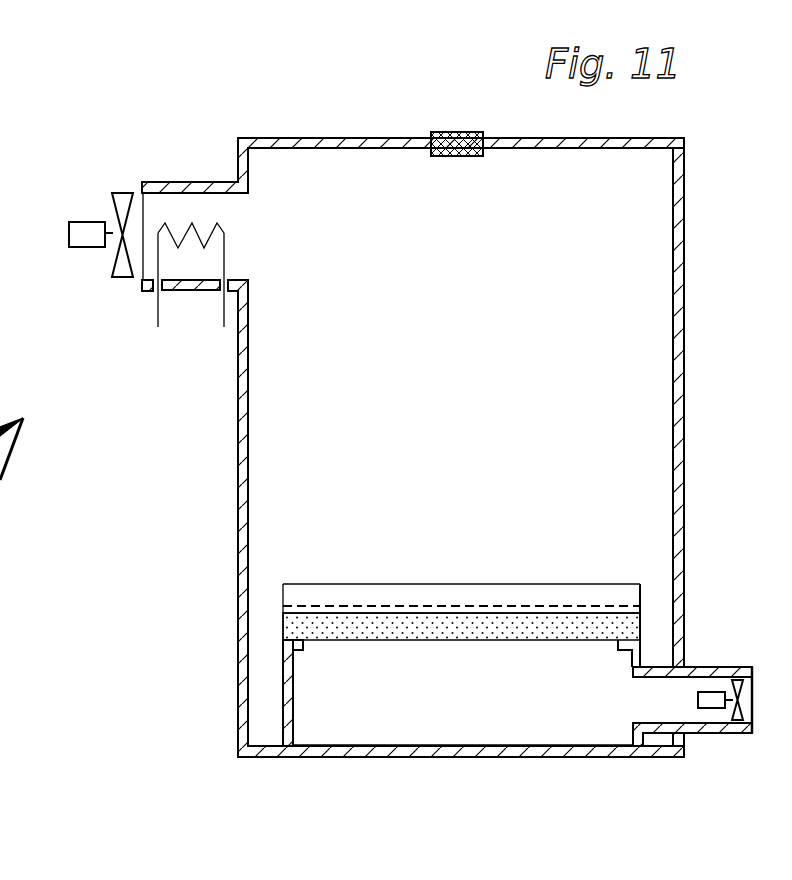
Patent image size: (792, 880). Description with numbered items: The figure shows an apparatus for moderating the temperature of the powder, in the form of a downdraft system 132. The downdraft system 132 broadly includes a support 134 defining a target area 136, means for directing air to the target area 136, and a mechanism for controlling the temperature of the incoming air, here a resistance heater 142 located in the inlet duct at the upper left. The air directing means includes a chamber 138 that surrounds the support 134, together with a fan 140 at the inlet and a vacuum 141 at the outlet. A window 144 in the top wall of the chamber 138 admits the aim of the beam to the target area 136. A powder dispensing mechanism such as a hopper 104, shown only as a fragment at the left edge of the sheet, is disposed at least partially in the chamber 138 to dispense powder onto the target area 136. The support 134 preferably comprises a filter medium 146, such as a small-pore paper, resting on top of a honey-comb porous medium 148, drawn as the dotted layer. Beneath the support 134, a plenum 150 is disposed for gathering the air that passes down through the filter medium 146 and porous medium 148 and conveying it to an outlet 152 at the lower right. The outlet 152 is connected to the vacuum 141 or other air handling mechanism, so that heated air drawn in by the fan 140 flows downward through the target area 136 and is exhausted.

The hopper 104 is at (0, 476).
The downdraft system 132 is at (224, 370).
The support 134 is at (643, 653).
The target area 136 is at (358, 600).
The chamber 138 is at (684, 422).
The fan 140 is at (77, 222).
The vacuum 141 is at (715, 708).
The resistance heater 142 is at (196, 205).
The window 144 is at (455, 132).
The filter medium 146 is at (283, 613).
The honey-comb porous medium 148 is at (370, 627).
The plenum 150 is at (493, 710).
The outlet 152 is at (700, 735).